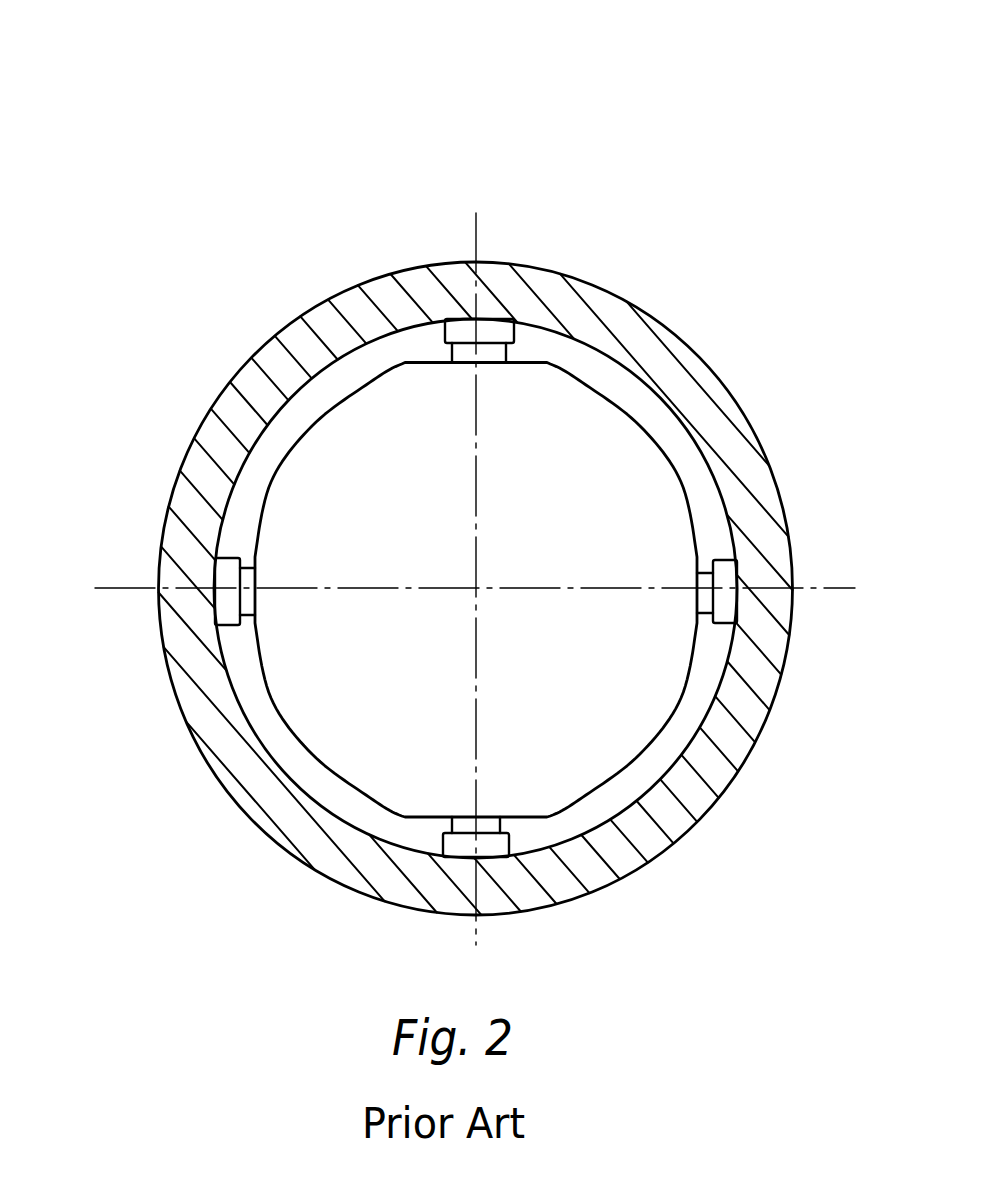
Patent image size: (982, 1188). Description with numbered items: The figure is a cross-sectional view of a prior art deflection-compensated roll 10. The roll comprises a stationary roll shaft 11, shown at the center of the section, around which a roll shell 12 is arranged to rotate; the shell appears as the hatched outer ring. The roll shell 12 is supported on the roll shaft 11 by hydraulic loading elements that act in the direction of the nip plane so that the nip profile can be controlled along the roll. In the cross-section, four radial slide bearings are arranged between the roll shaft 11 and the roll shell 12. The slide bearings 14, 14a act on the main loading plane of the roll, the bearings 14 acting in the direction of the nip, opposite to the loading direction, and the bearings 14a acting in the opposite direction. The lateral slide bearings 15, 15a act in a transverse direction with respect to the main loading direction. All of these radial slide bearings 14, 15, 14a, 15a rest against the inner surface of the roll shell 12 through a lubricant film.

The deflection-compensated roll 10 is at (603, 110).
The roll shaft 11 is at (628, 450).
The roll shell 12 is at (260, 378).
The slide bearings 14 is at (493, 337).
The slide bearings 14a is at (482, 847).
The lateral slide bearings 15 is at (726, 578).
The lateral slide bearings 15a is at (222, 582).